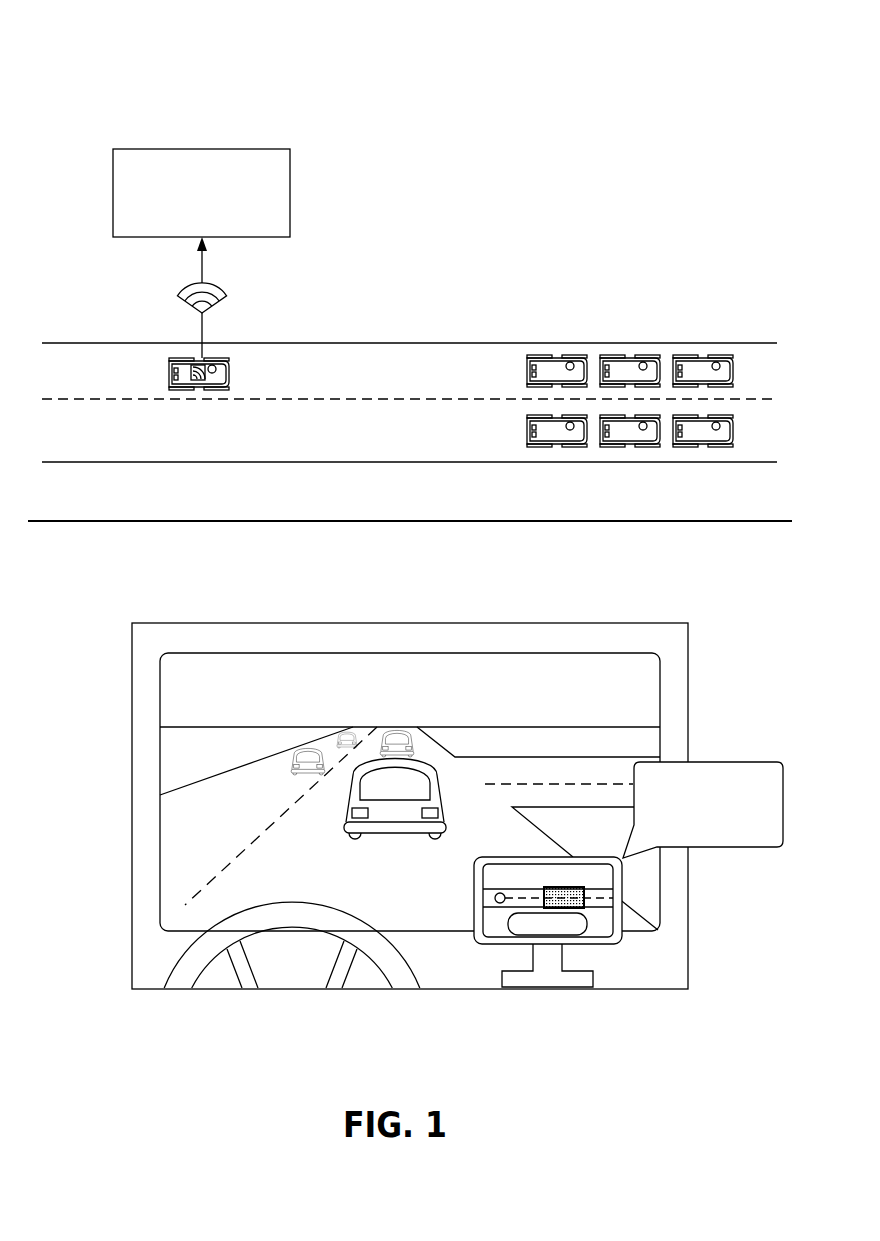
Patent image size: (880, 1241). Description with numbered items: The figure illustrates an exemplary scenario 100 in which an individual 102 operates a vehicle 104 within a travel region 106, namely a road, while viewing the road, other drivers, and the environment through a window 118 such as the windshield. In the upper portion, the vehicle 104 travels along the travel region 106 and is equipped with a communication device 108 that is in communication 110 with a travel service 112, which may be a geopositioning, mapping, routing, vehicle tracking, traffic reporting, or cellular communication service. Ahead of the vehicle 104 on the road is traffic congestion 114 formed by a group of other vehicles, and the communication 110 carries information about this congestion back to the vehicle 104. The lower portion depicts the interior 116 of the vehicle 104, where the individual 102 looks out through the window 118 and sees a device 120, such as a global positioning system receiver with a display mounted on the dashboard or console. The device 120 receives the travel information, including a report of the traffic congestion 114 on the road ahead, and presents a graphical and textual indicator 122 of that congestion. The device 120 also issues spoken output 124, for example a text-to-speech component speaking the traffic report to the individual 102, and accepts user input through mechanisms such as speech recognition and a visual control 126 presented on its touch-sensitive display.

The system environment 100 is at (124, 40).
The individual 102 is at (214, 364).
The vehicle 104 is at (170, 372).
The travel region 106 is at (102, 342).
The communication device 108 is at (197, 367).
The communication 110 is at (190, 290).
The travel service 112 is at (113, 172).
The traffic congestion 114 is at (630, 348).
The interior 116 is at (116, 568).
The window 118 is at (218, 652).
The device 120 is at (474, 880).
The indicator 122 is at (538, 868).
The spoken output 124 is at (727, 762).
The visual control 126 is at (508, 922).